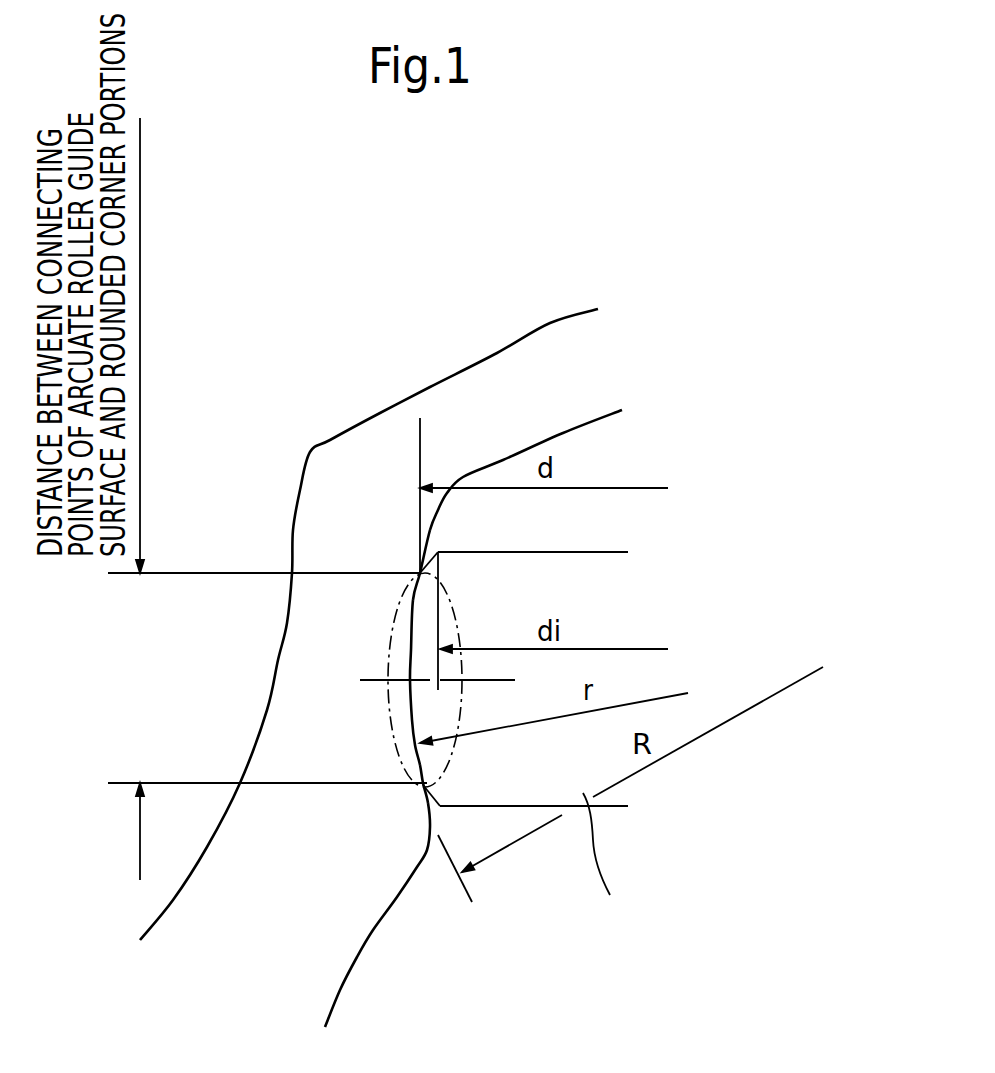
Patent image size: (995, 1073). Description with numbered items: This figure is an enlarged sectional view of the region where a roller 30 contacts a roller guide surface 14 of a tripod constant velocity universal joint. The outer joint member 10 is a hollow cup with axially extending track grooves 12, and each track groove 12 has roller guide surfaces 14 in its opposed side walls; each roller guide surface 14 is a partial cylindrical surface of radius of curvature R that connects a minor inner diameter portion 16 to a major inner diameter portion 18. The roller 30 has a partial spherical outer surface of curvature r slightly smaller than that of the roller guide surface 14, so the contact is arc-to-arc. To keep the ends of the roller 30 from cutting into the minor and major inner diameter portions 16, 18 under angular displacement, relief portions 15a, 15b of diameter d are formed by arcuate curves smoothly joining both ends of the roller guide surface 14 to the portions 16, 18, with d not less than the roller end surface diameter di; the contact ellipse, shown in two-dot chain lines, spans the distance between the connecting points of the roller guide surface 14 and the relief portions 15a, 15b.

The outer joint member 10 is at (550, 323).
The track groove 12 is at (521, 533).
The roller guide surface 14 is at (412, 699).
The relief portion 15a is at (427, 792).
The relief portion 15b is at (415, 563).
The minor inner diameter portion 16 is at (357, 955).
The major inner diameter portion 18 is at (582, 423).
The roller 30 is at (602, 863).